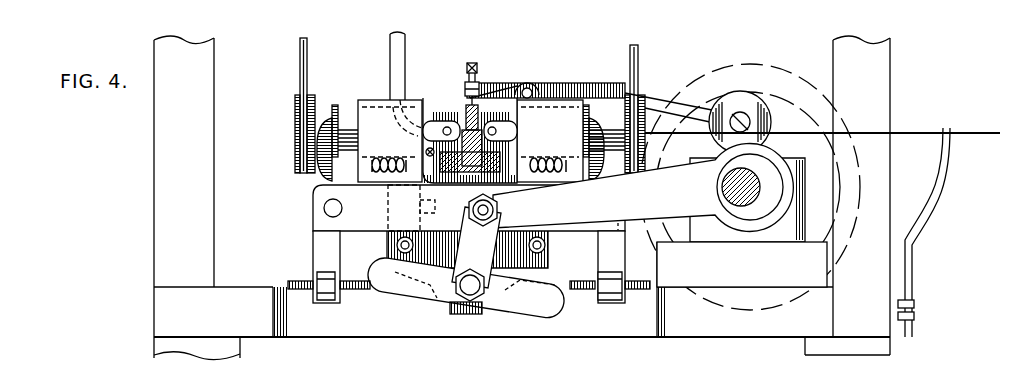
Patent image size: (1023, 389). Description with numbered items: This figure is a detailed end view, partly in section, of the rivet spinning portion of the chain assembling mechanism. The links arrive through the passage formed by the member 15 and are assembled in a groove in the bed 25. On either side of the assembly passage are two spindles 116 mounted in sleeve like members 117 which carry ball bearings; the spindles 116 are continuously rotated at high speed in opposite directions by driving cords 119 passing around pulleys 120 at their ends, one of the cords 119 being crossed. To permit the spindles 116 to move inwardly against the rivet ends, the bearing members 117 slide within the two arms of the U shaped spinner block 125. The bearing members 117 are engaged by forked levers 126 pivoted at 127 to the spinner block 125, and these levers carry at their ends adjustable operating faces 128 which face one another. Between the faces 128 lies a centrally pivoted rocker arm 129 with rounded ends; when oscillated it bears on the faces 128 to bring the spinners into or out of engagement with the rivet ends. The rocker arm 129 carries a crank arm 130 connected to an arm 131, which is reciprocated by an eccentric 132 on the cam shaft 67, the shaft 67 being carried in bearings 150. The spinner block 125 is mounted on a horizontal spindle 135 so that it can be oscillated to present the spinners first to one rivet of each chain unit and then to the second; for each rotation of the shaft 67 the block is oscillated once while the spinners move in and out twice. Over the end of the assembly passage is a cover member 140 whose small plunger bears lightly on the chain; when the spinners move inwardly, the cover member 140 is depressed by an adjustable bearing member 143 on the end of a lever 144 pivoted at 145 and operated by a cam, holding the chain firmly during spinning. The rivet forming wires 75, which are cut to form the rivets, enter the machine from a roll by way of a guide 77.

The member forming a passage 15 is at (392, 47).
The bed 25 is at (447, 122).
The cam shaft 67 is at (750, 189).
The rivet forming wires 75 is at (975, 132).
The guide 77 is at (938, 122).
The spindles 116 is at (520, 133).
The sleeve like members 117 is at (346, 104).
The driving cords 119 is at (300, 71).
The pulleys 120 is at (297, 133).
The spinner block 125 is at (429, 212).
The forked levers 126 is at (318, 183).
The pivot 127 is at (324, 210).
The adjustable operating faces 128 is at (366, 298).
The rocker arm 129 is at (424, 300).
The crank arm 130 is at (476, 247).
The arm 131 is at (643, 188).
The eccentric 132 is at (752, 213).
The horizontal spindle 135 is at (390, 222).
The cover member 140 is at (468, 104).
The adjustable bearing member 143 is at (474, 65).
The lever 144 is at (600, 92).
The pivot 145 is at (528, 90).
The bearings 150 is at (778, 234).